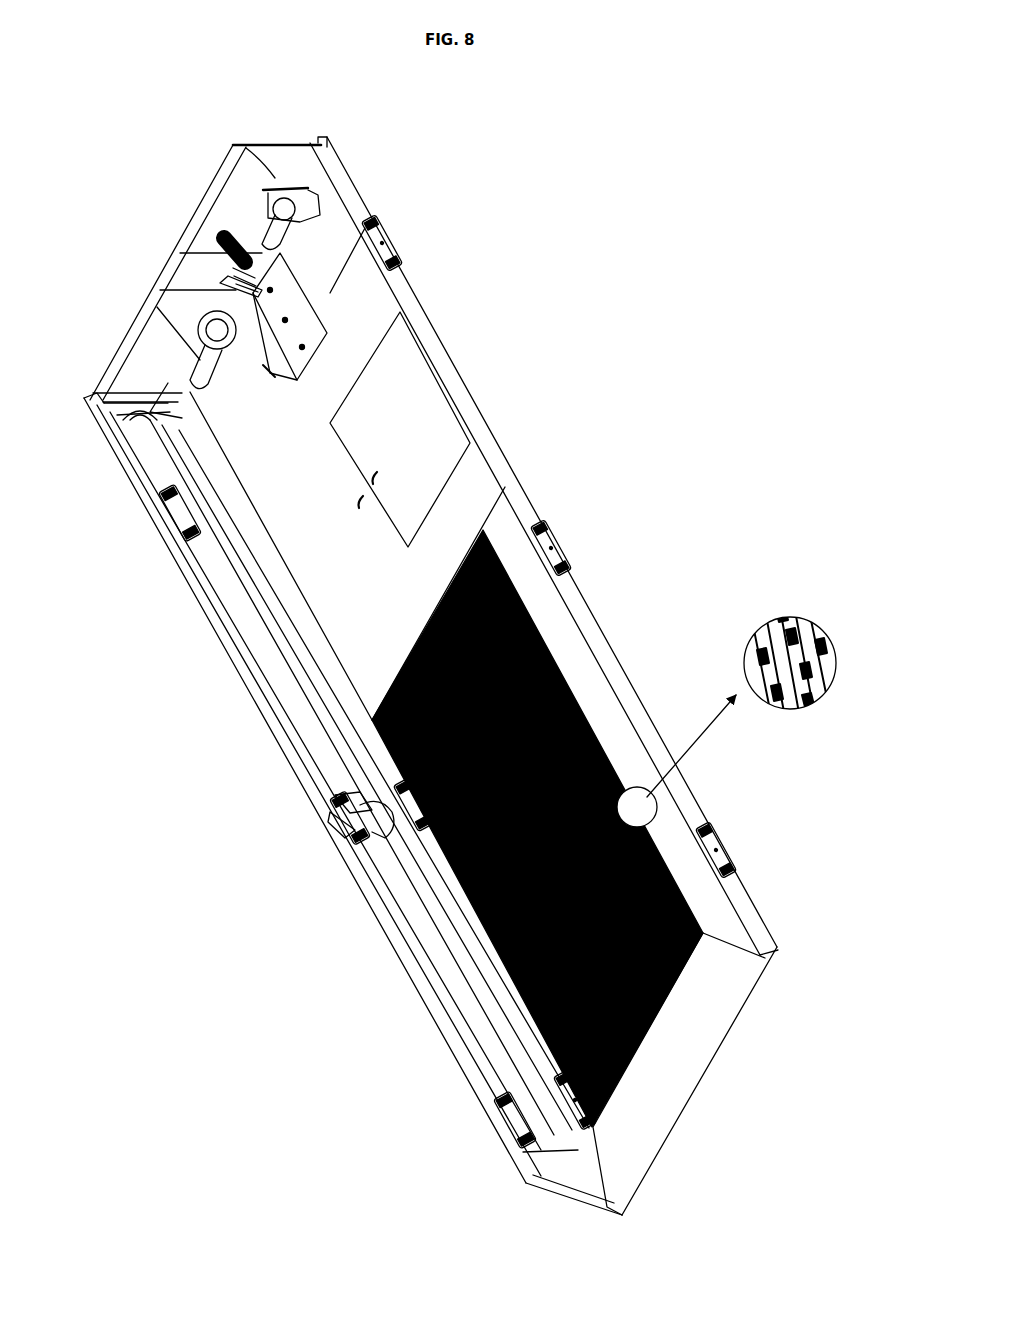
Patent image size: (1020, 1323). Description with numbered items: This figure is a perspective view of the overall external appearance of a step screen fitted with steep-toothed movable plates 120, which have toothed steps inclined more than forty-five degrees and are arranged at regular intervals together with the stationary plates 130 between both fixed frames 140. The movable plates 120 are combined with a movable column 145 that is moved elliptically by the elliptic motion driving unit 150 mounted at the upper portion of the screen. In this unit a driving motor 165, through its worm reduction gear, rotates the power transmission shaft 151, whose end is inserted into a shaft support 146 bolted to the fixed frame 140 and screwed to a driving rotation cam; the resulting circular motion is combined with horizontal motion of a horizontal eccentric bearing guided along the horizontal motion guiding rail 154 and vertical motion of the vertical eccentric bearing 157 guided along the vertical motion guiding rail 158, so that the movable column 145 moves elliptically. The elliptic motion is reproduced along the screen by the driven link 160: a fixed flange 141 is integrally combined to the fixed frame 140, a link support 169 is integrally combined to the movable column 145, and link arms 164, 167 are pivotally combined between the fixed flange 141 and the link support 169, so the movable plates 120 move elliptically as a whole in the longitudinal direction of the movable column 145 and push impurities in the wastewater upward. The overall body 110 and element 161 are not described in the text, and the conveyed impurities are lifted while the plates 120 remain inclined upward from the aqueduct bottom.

The frame 110 is at (650, 1153).
The steep-toothed movable plate 120 is at (834, 680).
The stationary plate 130 is at (790, 620).
The fixed frame 140 is at (487, 421).
The fixed flange 141 is at (390, 229).
The movable column 145 is at (240, 617).
The shaft support 146 is at (242, 143).
The elliptic motion driving unit 150 is at (95, 397).
The power transmission shaft 151 is at (262, 197).
The horizontal motion guiding rail 154 is at (273, 176).
The vertical eccentric bearing 157 is at (143, 398).
The vertical motion guiding rail 158 is at (128, 445).
The driven link 160 is at (213, 546).
The guide bar 161 is at (283, 650).
The link arm 164 is at (335, 797).
The driving motor 165 is at (262, 247).
The link arm 167 is at (387, 833).
The link support 169 is at (330, 814).